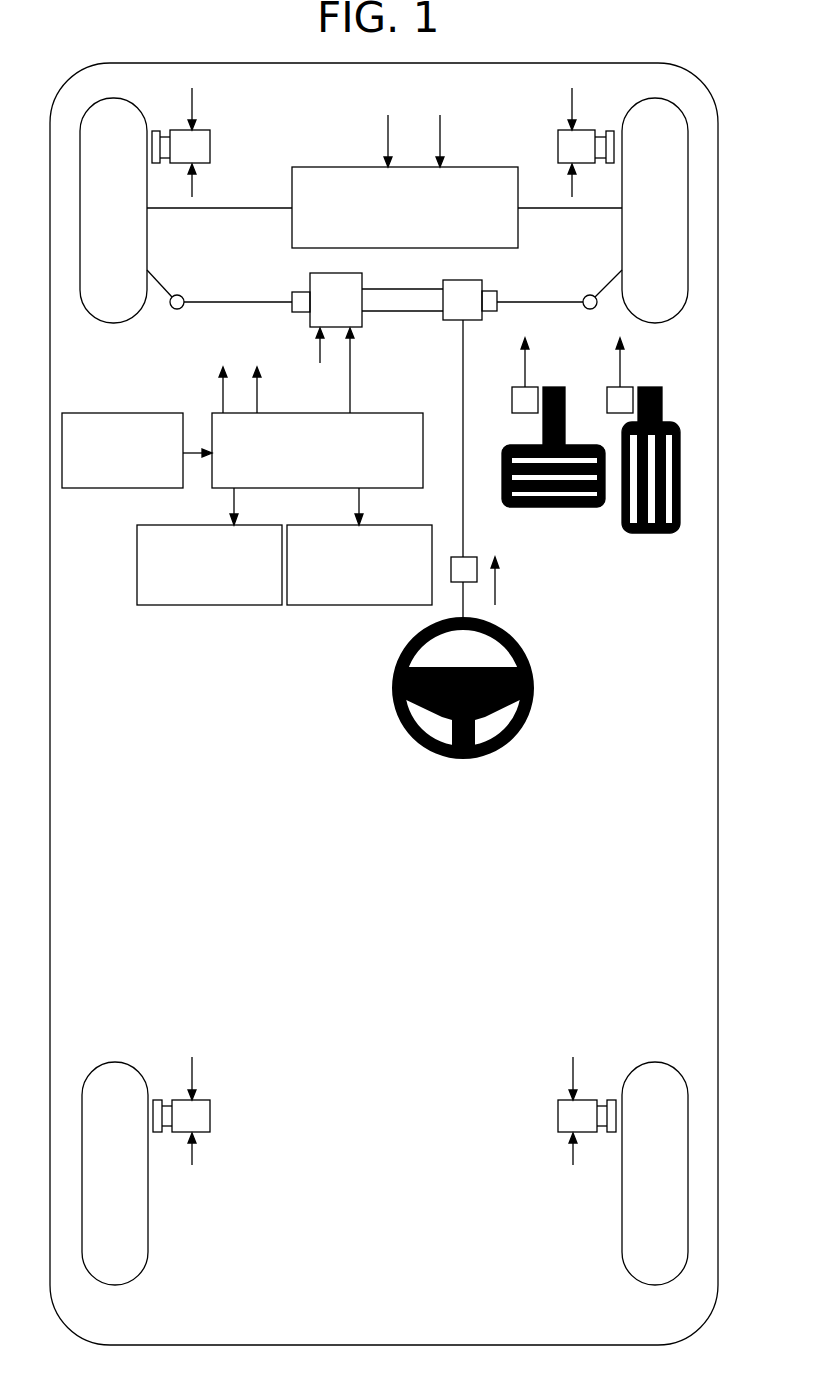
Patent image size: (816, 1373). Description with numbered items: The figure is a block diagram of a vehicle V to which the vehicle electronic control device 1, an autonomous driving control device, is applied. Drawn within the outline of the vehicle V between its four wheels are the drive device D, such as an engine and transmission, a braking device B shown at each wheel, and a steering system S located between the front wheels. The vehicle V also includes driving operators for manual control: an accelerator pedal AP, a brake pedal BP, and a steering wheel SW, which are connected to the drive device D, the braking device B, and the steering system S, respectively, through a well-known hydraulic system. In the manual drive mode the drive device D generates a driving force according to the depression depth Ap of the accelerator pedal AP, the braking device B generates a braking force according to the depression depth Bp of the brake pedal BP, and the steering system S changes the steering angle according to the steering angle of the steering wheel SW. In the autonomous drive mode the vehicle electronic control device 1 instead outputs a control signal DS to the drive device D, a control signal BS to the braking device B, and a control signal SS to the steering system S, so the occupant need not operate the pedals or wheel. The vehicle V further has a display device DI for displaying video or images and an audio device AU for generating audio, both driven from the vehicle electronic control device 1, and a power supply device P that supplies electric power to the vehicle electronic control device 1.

The vehicle V is at (647, 63).
The braking device B is at (210, 145).
The control signal BS is at (404, 592).
The operation amount Bp is at (405, 670).
The drive device D is at (310, 167).
The control signal DS is at (293, 250).
The operation amount Ap is at (549, 235).
The steering system S is at (350, 273).
The control signal SS is at (369, 370).
The power supply device P is at (90, 413).
The vehicle electronic control device 1 is at (378, 413).
The display device DI is at (145, 605).
The audio device AU is at (313, 605).
The steering wheel SW is at (460, 760).
The brake pedal BP is at (548, 507).
The accelerator pedal AP is at (643, 533).